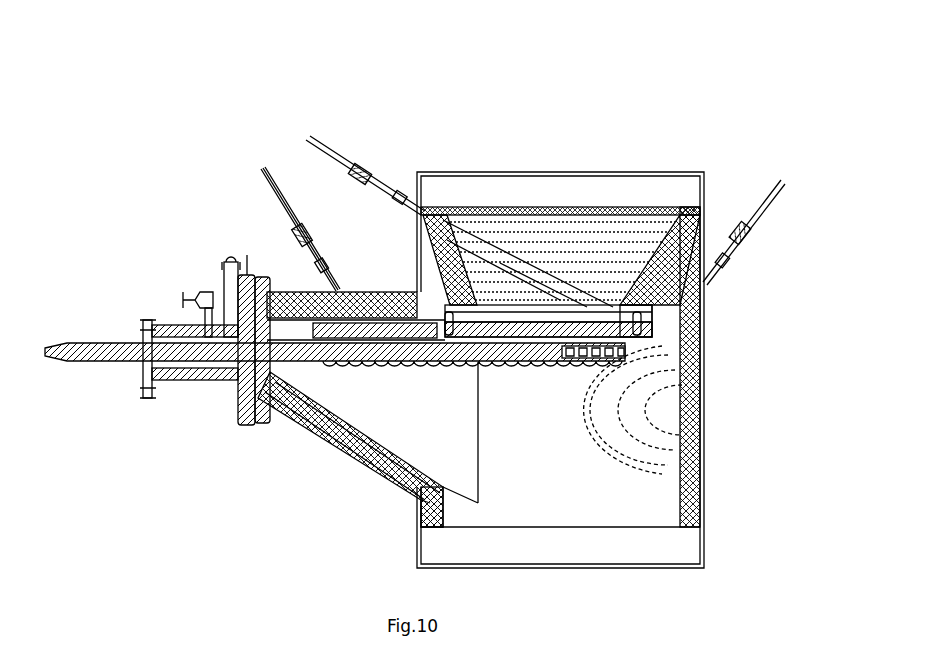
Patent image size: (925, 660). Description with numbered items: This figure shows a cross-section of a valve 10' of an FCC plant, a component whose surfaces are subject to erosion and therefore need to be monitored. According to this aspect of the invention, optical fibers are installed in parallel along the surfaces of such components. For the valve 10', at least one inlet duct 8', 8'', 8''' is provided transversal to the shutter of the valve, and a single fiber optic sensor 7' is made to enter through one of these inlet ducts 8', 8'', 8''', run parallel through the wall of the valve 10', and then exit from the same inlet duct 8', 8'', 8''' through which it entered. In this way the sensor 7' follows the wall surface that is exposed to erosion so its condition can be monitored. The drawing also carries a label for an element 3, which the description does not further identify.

The valve 10' is at (448, 297).
The fiber optic sensor 7' is at (300, 182).
The inlet duct 8' is at (366, 153).
The inlet duct 8'' is at (262, 229).
The inlet duct 8''' is at (789, 232).
The outlet 3 is at (670, 313).